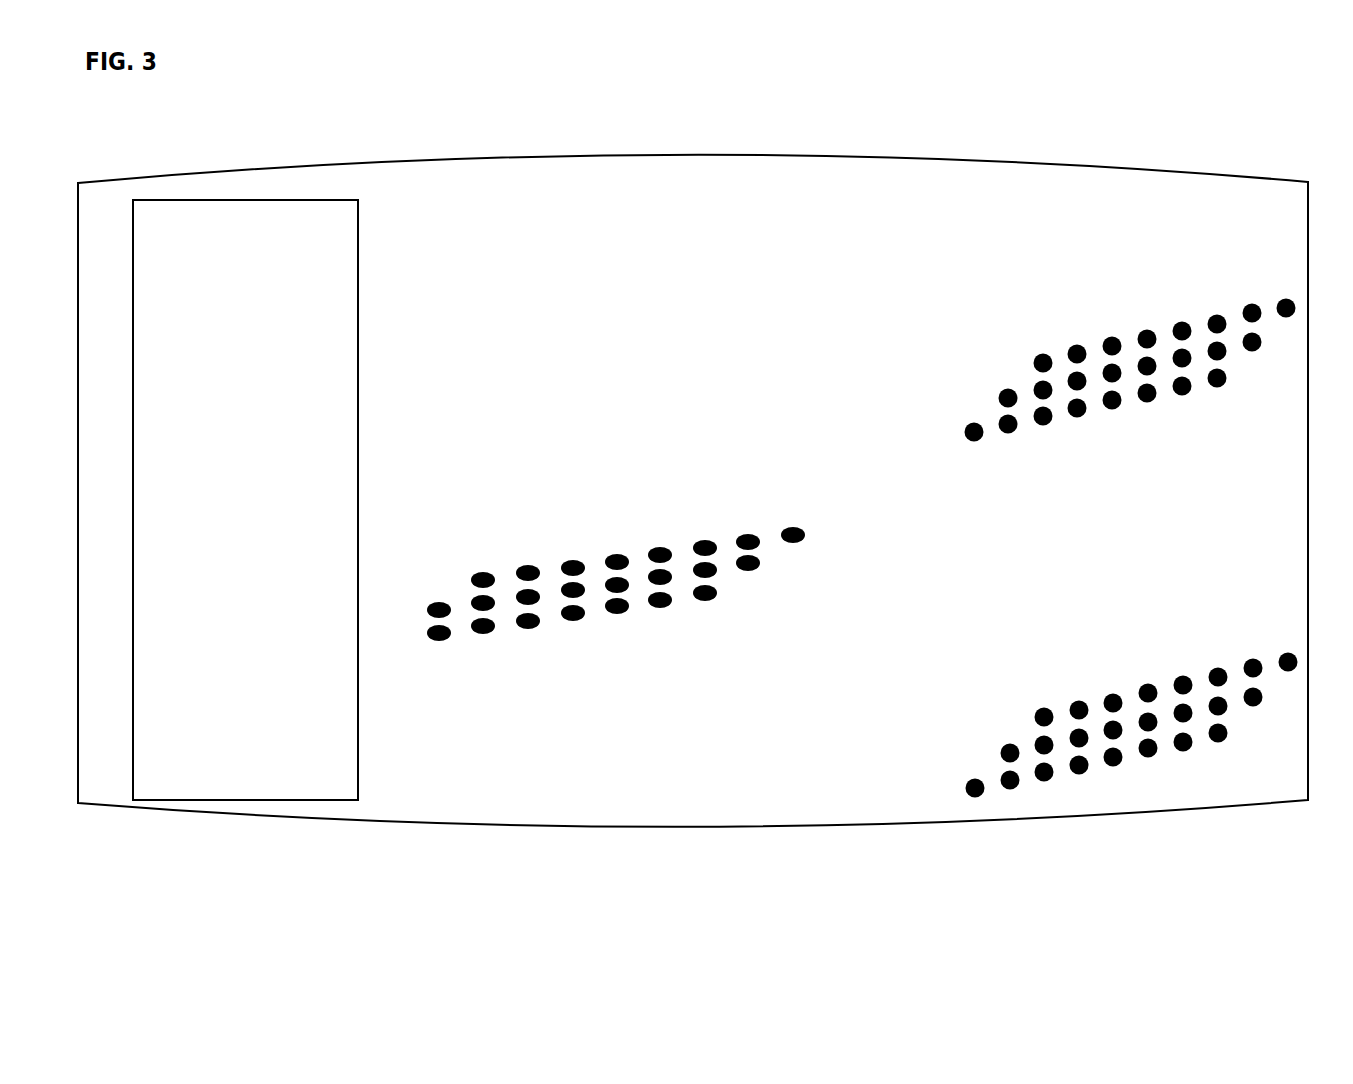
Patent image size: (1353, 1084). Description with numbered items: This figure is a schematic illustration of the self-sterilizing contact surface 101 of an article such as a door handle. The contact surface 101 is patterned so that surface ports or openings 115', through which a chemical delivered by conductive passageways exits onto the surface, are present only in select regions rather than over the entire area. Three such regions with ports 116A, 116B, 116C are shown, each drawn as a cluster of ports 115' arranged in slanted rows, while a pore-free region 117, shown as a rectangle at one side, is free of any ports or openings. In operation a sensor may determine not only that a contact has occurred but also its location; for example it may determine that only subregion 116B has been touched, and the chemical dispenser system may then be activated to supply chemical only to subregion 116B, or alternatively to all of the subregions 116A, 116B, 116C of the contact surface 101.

The contact surface 101 is at (385, 873).
The surface ports or openings 115' is at (1204, 817).
The region with ports 116A is at (1037, 336).
The region with ports 116B is at (947, 782).
The region with ports 116C is at (385, 873).
The pore-free region 117 is at (358, 800).